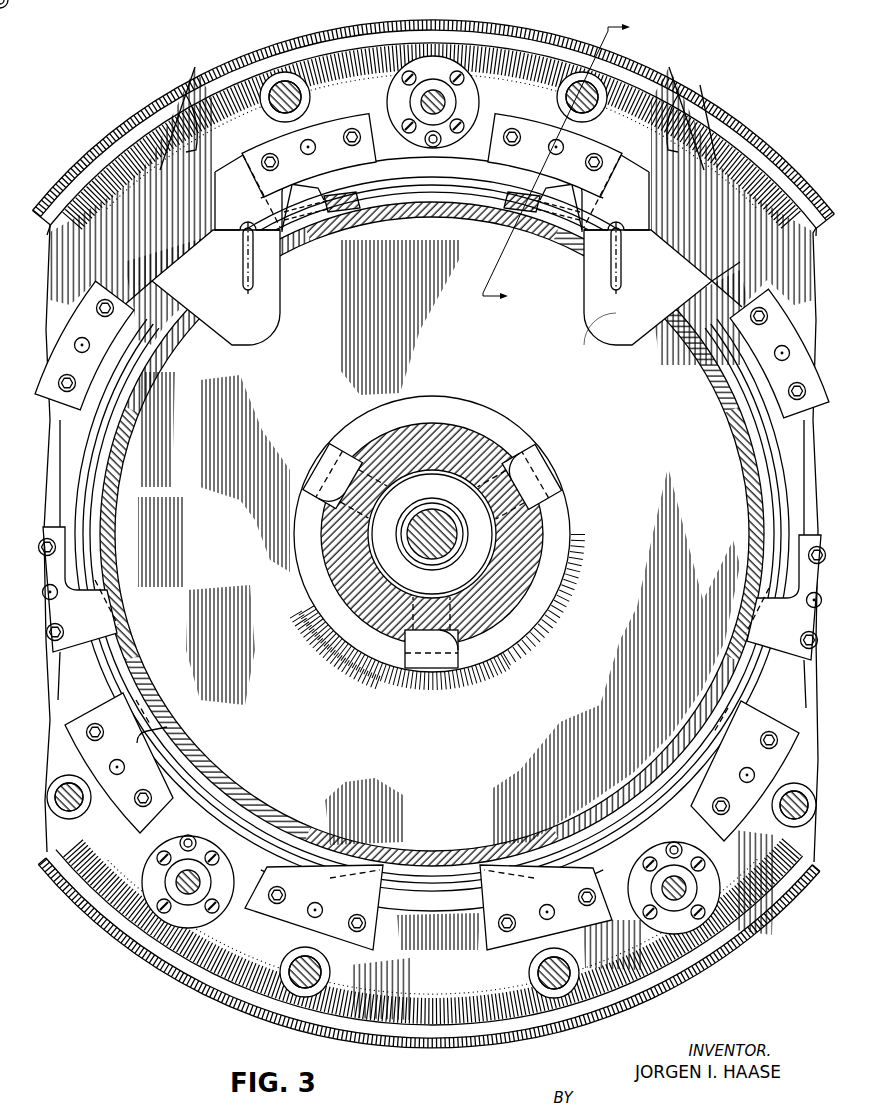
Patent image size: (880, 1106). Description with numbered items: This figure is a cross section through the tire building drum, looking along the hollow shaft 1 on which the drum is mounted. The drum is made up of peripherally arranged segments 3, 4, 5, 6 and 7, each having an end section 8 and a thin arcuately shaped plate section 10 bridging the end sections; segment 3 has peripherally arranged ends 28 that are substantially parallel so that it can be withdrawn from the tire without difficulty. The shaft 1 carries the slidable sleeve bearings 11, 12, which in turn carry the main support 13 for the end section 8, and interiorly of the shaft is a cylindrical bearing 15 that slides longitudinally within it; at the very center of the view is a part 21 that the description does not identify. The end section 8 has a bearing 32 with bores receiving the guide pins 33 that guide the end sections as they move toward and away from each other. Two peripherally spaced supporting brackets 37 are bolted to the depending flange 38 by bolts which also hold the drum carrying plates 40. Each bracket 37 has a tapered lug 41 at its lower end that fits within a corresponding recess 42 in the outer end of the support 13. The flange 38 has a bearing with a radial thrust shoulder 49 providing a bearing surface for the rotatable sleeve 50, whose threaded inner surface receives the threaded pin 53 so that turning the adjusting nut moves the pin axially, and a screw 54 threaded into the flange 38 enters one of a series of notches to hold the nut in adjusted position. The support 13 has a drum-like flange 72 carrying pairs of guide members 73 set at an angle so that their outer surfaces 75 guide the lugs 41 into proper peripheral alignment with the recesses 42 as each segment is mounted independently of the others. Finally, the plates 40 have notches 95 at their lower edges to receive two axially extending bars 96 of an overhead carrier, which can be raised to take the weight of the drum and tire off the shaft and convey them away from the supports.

The hollow shaft 1 is at (530, 440).
The drum segment 3 is at (328, 45).
The drum segment 4 is at (786, 178).
The drum segment 5 is at (735, 930).
The drum segment 6 is at (145, 982).
The drum segment 7 is at (88, 190).
The end section 8 is at (672, 84).
The arcuately shaped plate section 10 is at (236, 58).
The sleeve bearing 11 is at (410, 665).
The sleeve bearing 12 is at (459, 651).
The main support 13 is at (580, 348).
The cylindrical bearing 15 is at (398, 492).
The shaft 21 is at (420, 550).
The peripherally arranged ends 28 is at (186, 95).
The bearing 32 is at (304, 97).
The guide pins 33 is at (280, 112).
The supporting brackets 37 is at (366, 160).
The depending flange 38 is at (152, 268).
The drum carrying plates 40 is at (232, 172).
The tapered lug 41 is at (168, 360).
The recess 42 is at (432, 218).
The radial thrust shoulder 49 is at (464, 98).
The rotatable sleeve 50 is at (415, 98).
The threaded pin 53 is at (424, 106).
The screw 54 is at (438, 146).
The drum-like flange 72 is at (198, 322).
The guide members 73 is at (350, 213).
The outer surfaces 75 is at (320, 196).
The notches 95 is at (435, 256).
The axially extending bars 96 is at (246, 270).